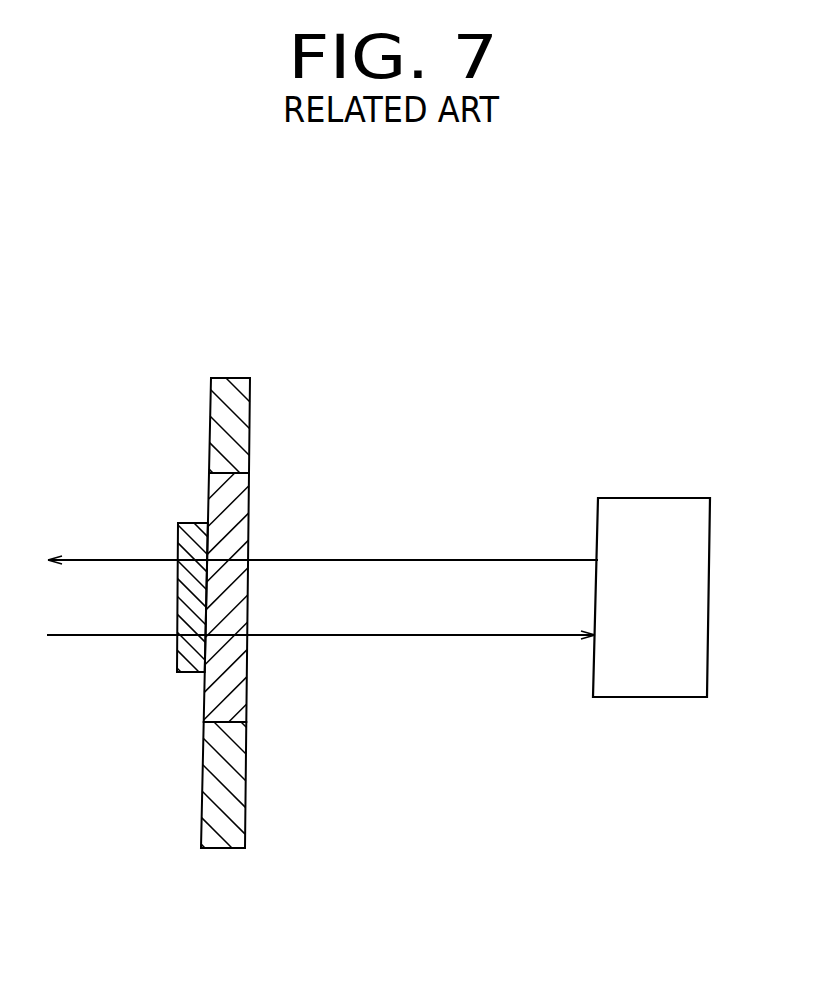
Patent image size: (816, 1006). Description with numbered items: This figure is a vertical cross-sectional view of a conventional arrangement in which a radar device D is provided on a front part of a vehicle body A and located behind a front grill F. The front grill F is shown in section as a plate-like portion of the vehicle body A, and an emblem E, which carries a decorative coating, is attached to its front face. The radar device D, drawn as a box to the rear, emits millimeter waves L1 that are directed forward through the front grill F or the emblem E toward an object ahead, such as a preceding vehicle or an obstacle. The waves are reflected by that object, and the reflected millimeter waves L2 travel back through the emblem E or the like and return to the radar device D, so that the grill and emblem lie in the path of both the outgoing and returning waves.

The vehicle body A is at (216, 430).
The front grill F is at (212, 500).
The emblem E is at (182, 664).
The millimeter waves L1 is at (424, 560).
The millimeter waves L2 is at (424, 635).
The radar device D is at (650, 697).